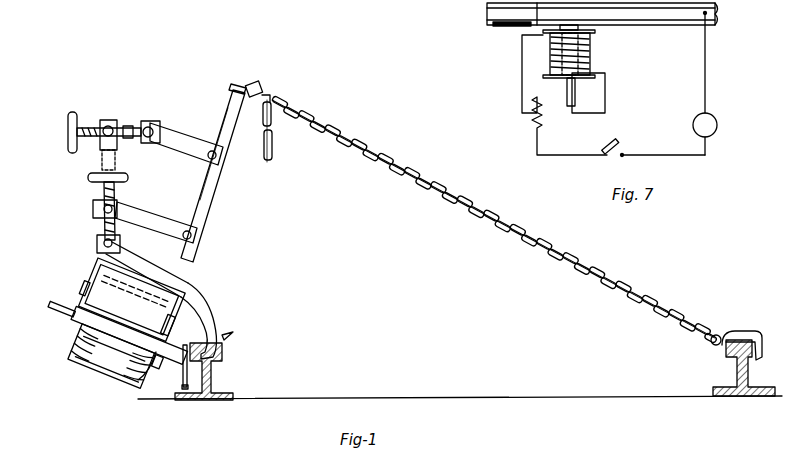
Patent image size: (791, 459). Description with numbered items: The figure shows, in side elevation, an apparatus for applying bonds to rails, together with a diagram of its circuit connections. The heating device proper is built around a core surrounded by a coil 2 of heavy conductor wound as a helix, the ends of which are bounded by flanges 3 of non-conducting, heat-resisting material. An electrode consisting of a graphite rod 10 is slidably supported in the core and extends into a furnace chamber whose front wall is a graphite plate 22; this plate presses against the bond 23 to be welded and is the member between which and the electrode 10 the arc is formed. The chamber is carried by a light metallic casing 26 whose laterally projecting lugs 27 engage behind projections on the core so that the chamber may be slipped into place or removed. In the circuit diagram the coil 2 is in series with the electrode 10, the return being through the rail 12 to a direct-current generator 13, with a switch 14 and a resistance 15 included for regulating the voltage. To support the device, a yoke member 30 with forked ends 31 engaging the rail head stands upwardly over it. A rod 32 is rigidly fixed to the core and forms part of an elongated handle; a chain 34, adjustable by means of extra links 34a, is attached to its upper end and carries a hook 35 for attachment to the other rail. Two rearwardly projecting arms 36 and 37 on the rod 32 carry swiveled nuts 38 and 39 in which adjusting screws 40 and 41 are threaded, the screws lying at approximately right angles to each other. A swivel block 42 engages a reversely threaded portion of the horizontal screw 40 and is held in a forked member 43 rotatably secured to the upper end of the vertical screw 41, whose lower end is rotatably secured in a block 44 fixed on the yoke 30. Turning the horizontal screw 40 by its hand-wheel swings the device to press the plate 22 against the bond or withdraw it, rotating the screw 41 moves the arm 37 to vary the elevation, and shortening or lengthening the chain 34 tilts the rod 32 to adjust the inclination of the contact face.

In FIG. 7, the coil 2 is at (548, 56).
In FIG. 7, the flanges 3 is at (595, 74).
In FIG. 7, the electrode 10 is at (568, 104).
In FIG. 1, the rail 12 is at (210, 378).
In FIG. 7, the rail 12 is at (718, 18).
In FIG. 7, the generator 13 is at (718, 130).
In FIG. 7, the switch 14 is at (619, 146).
In FIG. 7, the resistance 15 is at (527, 124).
In FIG. 1, the graphite block or plate 22 is at (195, 334).
In FIG. 1, the bond 23 is at (188, 368).
In FIG. 7, the bond 23 is at (526, 27).
In FIG. 1, the metallic casing 26 is at (186, 331).
In FIG. 1, the lugs 27 is at (150, 364).
In FIG. 1, the yoke member 30 is at (186, 258).
In FIG. 1, the forked ends 31 is at (224, 336).
In FIG. 1, the rod 32 is at (203, 202).
In FIG. 1, the chain 34 is at (380, 157).
In FIG. 1, the extra links 34a is at (273, 138).
In FIG. 1, the hook 35 is at (744, 332).
In FIG. 1, the rearwardly projecting arm 36 is at (192, 137).
In FIG. 1, the rearwardly projecting arm 37 is at (167, 221).
In FIG. 1, the nut 38 is at (150, 120).
In FIG. 1, the nut 39 is at (93, 210).
In FIG. 1, the horizontal adjusting screw 40 is at (128, 126).
In FIG. 1, the vertical adjusting screw 41 is at (103, 228).
In FIG. 1, the swivel block 42 is at (105, 120).
In FIG. 1, the forked member 43 is at (100, 140).
In FIG. 1, the block 44 is at (97, 243).